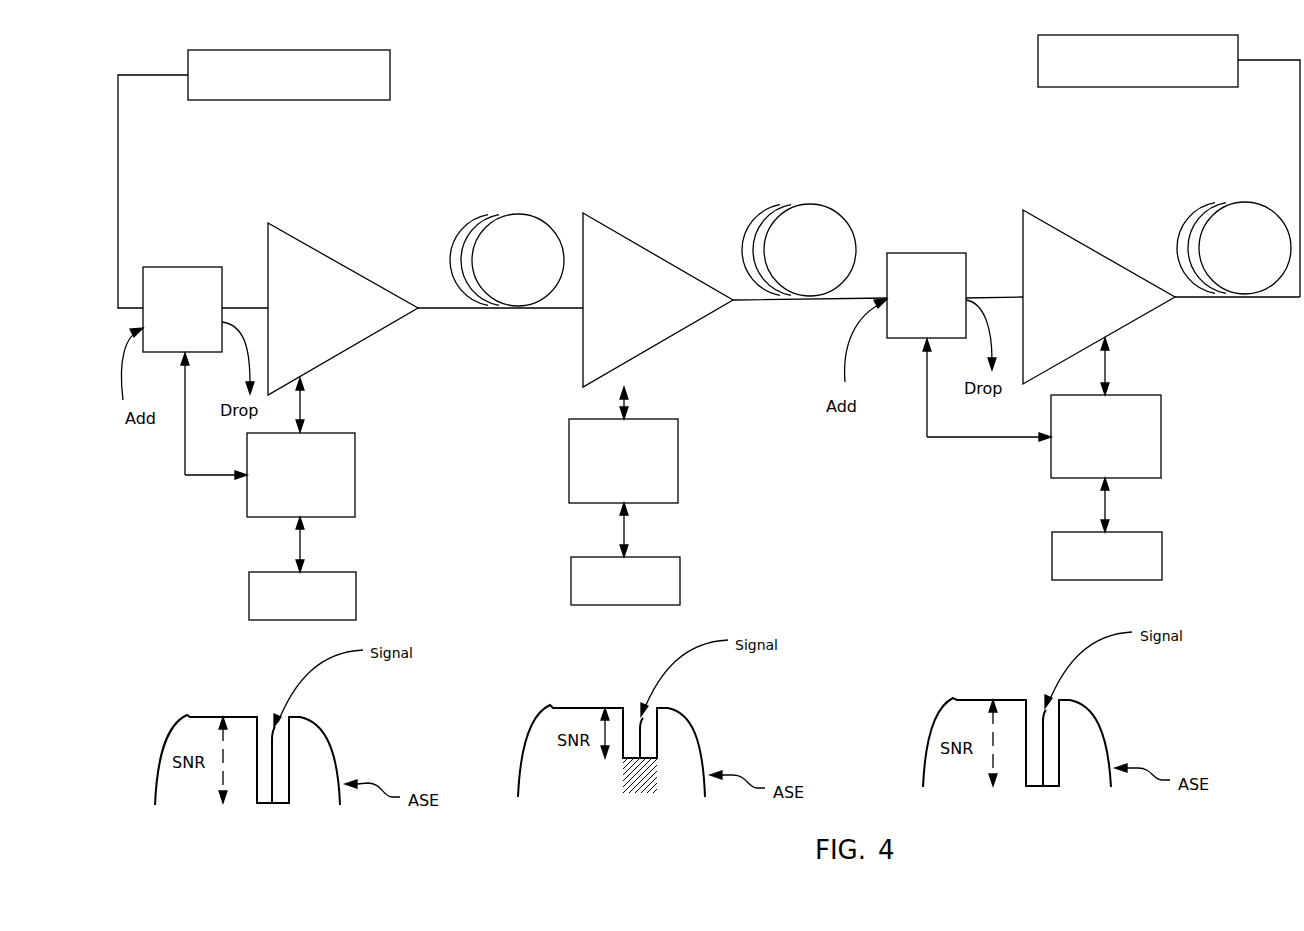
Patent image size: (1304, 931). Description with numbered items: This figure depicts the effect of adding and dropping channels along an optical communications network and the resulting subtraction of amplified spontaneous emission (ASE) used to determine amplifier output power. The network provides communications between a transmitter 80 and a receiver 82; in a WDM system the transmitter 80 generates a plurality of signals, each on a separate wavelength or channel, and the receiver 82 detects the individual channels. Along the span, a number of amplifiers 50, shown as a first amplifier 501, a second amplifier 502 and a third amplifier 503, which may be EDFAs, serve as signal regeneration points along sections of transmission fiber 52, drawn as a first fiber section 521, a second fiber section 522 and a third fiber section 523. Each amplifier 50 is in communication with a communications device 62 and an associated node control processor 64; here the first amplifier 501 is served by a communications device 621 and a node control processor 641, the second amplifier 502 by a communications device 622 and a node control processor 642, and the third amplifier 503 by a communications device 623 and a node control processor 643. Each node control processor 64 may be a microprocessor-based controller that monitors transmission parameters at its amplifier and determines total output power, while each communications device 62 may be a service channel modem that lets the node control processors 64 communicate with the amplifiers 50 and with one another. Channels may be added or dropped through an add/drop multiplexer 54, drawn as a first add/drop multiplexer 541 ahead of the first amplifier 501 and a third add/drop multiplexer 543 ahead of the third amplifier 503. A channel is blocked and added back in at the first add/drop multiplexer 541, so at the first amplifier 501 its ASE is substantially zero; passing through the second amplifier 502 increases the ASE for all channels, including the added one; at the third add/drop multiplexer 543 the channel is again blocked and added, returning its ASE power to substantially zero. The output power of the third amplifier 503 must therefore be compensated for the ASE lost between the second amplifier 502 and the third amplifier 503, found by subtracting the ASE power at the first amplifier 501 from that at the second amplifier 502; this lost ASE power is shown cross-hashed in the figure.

The transmitter 80 is at (390, 76).
The receiver 82 is at (1038, 61).
The amplifier 50 is at (721, 302).
The amplifier 501 is at (343, 309).
The amplifier 502 is at (658, 300).
The amplifier 503 is at (1099, 297).
The transmission fiber 52 is at (857, 219).
The transmission fiber 521 is at (493, 212).
The transmission fiber 522 is at (786, 205).
The transmission fiber 523 is at (1240, 202).
The add/drop multiplexer 54 is at (558, 267).
The add/drop multiplexer 541 is at (180, 267).
The add/drop multiplexer 543 is at (925, 253).
The communications device 62 is at (751, 427).
The communications device 621 is at (355, 477).
The communications device 622 is at (678, 461).
The communications device 623 is at (1161, 437).
The node control processor 64 is at (748, 549).
The node control processor 641 is at (356, 593).
The node control processor 642 is at (680, 579).
The node control processor 643 is at (1162, 557).